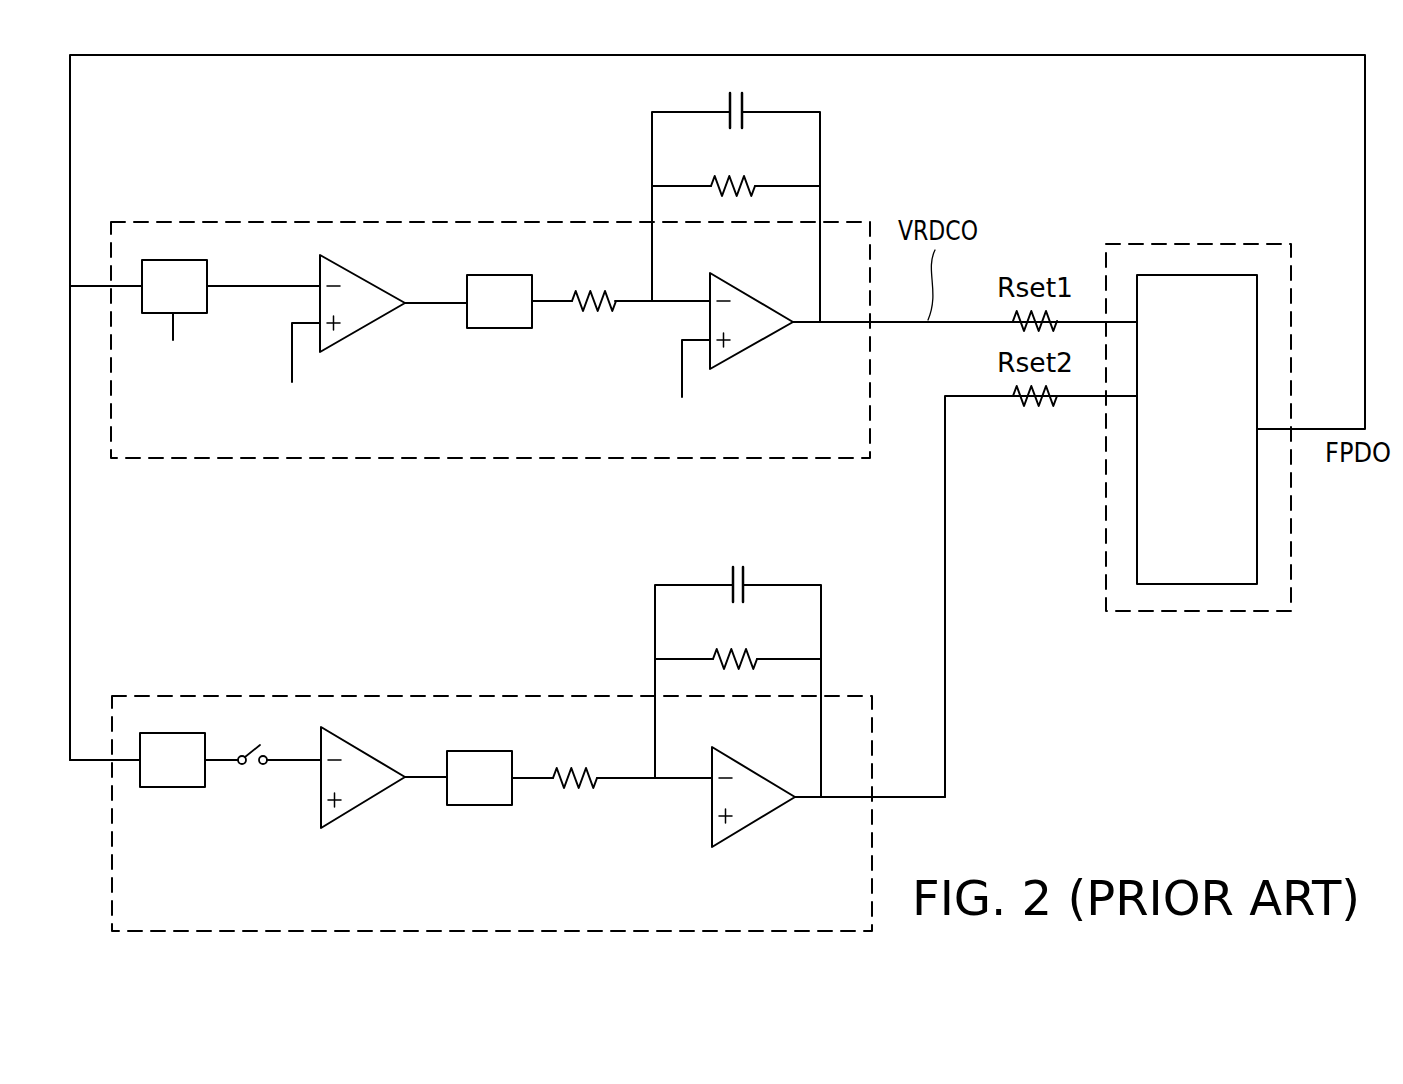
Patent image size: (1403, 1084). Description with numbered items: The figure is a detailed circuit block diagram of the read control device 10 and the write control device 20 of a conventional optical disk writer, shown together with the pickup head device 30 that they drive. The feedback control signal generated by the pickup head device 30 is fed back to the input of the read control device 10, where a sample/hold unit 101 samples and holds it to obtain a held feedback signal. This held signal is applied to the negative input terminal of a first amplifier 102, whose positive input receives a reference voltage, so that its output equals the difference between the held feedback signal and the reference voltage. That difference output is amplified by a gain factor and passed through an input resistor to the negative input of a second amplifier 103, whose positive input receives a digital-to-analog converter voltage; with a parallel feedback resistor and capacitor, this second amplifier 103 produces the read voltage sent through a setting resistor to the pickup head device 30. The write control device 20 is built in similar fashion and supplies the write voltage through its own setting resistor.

The read control device 10 is at (490, 222).
The write control device 20 is at (492, 694).
The pickup head device 30 is at (1200, 243).
The sample/hold unit 101 is at (173, 261).
The amplifier 102 is at (362, 277).
The amplifier (OP1) 103 is at (735, 285).